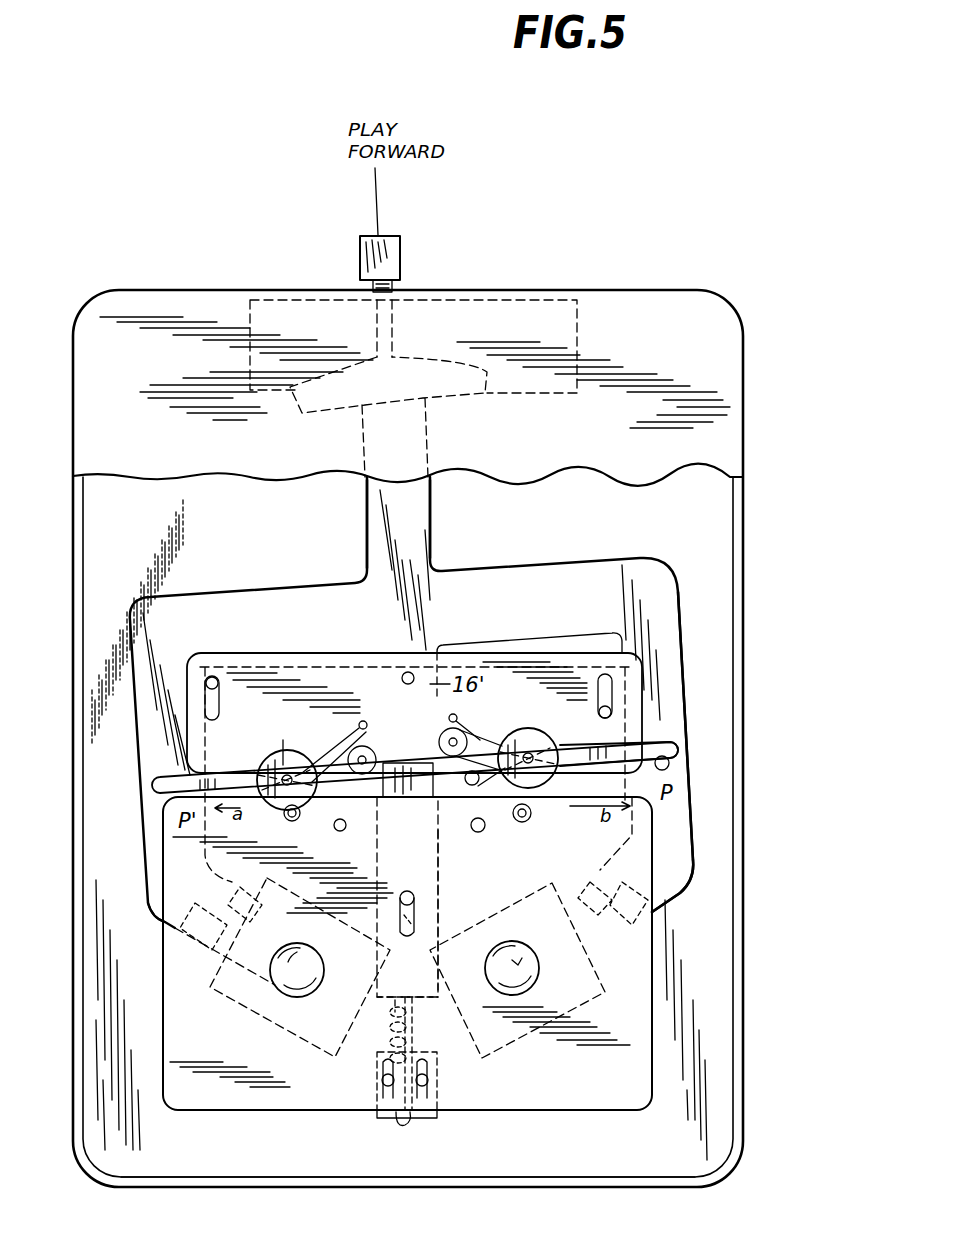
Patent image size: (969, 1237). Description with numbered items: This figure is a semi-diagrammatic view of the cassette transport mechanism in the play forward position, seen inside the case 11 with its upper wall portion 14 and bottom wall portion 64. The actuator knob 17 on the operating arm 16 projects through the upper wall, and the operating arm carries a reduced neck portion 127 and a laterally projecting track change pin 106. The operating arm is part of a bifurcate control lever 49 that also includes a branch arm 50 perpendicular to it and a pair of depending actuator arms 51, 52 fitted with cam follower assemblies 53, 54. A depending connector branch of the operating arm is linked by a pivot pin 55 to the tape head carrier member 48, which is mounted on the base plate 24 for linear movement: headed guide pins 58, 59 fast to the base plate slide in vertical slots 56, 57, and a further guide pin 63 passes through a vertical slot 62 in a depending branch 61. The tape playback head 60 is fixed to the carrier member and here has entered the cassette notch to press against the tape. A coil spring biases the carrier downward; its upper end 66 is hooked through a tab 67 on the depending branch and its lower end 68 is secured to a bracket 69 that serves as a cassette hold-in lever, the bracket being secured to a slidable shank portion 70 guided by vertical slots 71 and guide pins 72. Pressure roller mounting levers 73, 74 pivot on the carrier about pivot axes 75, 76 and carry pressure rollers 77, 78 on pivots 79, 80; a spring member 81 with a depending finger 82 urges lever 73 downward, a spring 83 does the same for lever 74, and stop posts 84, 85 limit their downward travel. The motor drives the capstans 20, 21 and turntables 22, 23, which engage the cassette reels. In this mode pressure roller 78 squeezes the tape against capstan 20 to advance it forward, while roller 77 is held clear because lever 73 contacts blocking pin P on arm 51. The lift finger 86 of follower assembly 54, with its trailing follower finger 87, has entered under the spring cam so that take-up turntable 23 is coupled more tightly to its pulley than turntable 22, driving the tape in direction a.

The case 11 is at (745, 1030).
The upper wall portion 14 is at (300, 295).
The operating arm 16 is at (366, 513).
The actuator knob 17 is at (401, 264).
The tape drive capstan 20 is at (294, 822).
The tape drive capstan 21 is at (533, 813).
The tape feed turntable 22 is at (538, 985).
The tape feed turntable 23 is at (300, 998).
The base plate 24 is at (258, 514).
The tape head carrier member 48 is at (640, 665).
The control lever 49 is at (431, 512).
The branch arm 50 is at (302, 583).
The actuator arm 51 is at (690, 840).
The actuator arm 52 is at (145, 815).
The cam follower assembly 53 is at (674, 884).
The cam follower assembly 54 is at (141, 908).
The pivot pin 55 is at (408, 672).
The vertical slot 56 is at (218, 710).
The vertical slot 57 is at (605, 668).
The headed guide pin 58 is at (213, 678).
The headed guide pin 59 is at (612, 712).
The tape playback head 60 is at (398, 838).
The depending branch 61 is at (440, 856).
The vertical slot 62 is at (416, 920).
The guide pin 63 is at (415, 897).
The bottom wall portion 64 is at (513, 1180).
The upper end of coil spring 66 is at (390, 1002).
The upwardly projecting tab 67 is at (400, 995).
The lower end of spring 68 is at (402, 1126).
The bracket 69 is at (437, 1116).
The slidable shank portion 70 is at (378, 1108).
The vertical slots 71 is at (385, 1062).
The guide pins 72 is at (382, 1081).
The pressure roller mounting lever 73 is at (616, 762).
The pressure roller mounting lever 74 is at (211, 784).
The pivot axis 75 is at (450, 735).
The pivot axis 76 is at (370, 762).
The pressure roller 77 is at (536, 740).
The pressure roller 78 is at (283, 748).
The pivot 79 is at (530, 758).
The pivot 80 is at (281, 777).
The spring member 81 is at (458, 716).
The depending finger 82 is at (492, 740).
The spring 83 is at (326, 760).
The stop post 84 is at (444, 779).
The stop post 85 is at (341, 819).
The lift finger 86 is at (250, 905).
The follower finger 87 is at (203, 946).
The track change pin 106 is at (390, 380).
The reduced neck portion 127 is at (393, 326).